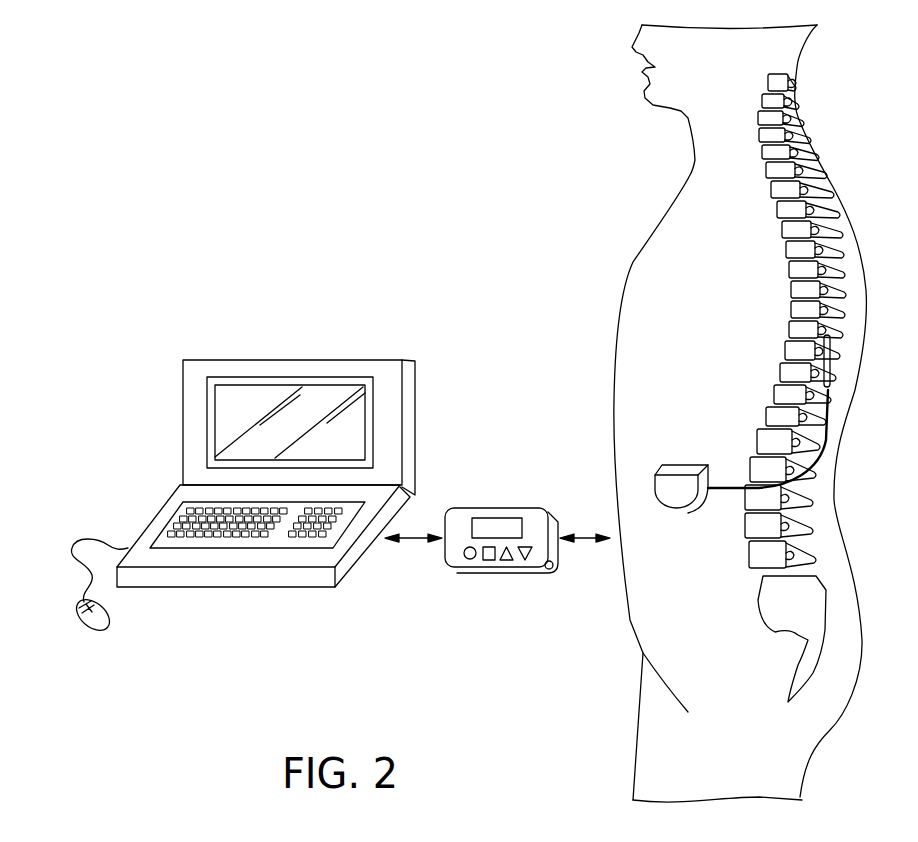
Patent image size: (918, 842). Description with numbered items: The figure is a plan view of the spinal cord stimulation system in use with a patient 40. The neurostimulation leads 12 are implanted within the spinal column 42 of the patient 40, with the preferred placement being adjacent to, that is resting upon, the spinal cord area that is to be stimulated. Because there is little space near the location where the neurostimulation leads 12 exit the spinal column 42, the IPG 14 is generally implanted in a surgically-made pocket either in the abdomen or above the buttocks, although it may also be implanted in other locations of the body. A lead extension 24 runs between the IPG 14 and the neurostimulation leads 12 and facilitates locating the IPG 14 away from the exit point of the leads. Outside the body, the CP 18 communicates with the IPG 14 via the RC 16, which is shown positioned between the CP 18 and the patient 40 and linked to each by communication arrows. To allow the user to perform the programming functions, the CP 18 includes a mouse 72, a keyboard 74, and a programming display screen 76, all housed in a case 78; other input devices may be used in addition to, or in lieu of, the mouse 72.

The neurostimulation leads 12 is at (832, 360).
The IPG 14 is at (682, 497).
The RC 16 is at (525, 468).
The CP 18 is at (252, 469).
The lead extension 24 is at (829, 442).
The patient 40 is at (630, 277).
The spinal column 42 is at (785, 335).
The mouse 72 is at (92, 620).
The keyboard 74 is at (223, 550).
The programming display screen 76 is at (375, 422).
The case 78 is at (160, 510).